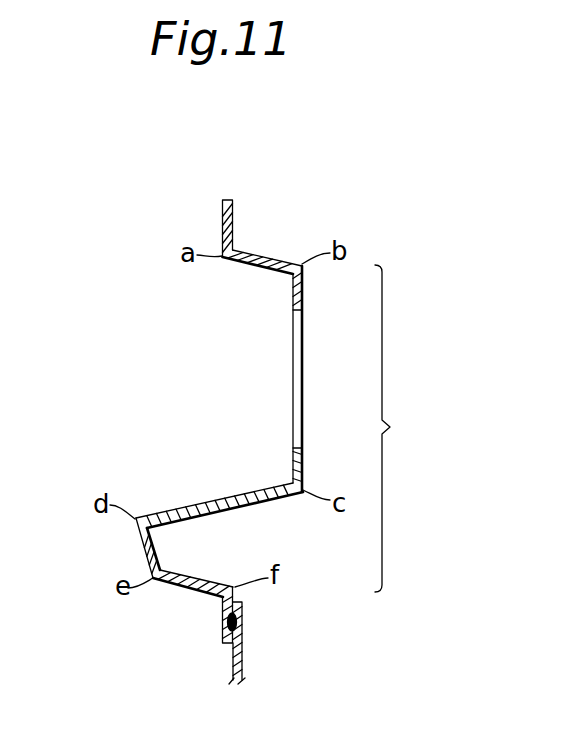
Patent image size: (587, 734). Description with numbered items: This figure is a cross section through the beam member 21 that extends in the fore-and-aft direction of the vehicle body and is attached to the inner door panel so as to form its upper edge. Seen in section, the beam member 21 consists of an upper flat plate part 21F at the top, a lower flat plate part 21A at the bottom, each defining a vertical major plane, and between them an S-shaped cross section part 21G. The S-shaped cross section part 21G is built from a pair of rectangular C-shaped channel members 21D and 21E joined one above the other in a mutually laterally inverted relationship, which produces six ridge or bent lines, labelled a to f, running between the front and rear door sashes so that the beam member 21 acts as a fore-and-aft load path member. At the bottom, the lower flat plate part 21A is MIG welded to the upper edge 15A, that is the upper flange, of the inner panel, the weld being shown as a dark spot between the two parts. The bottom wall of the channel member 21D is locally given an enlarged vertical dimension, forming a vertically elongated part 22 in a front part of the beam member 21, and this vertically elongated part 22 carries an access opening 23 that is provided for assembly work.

The beam member 21 is at (312, 221).
The upper flat plate part 21F is at (233, 220).
The channel member 21D is at (293, 290).
The access opening 23 is at (293, 318).
The vertically elongated part 22 is at (293, 458).
The S-shaped cross section part 21G is at (416, 428).
The channel member 21E is at (143, 540).
The lower flat plate part 21A is at (221, 628).
The upper edge of the inner panel 15A is at (243, 637).